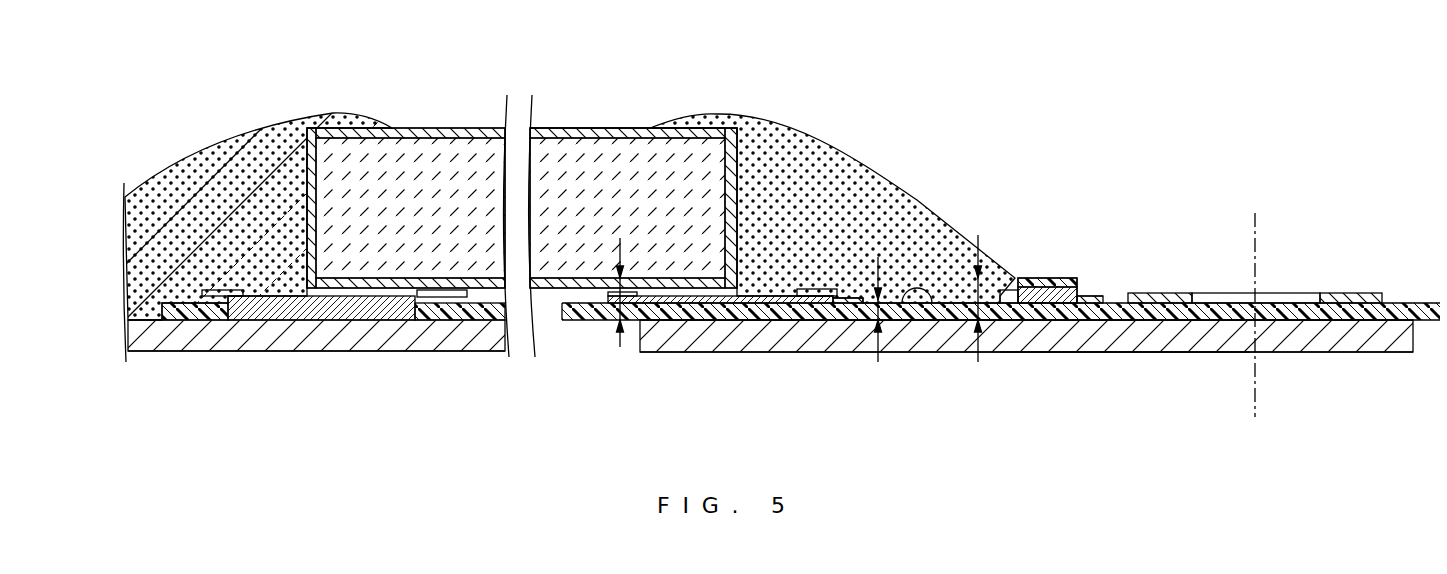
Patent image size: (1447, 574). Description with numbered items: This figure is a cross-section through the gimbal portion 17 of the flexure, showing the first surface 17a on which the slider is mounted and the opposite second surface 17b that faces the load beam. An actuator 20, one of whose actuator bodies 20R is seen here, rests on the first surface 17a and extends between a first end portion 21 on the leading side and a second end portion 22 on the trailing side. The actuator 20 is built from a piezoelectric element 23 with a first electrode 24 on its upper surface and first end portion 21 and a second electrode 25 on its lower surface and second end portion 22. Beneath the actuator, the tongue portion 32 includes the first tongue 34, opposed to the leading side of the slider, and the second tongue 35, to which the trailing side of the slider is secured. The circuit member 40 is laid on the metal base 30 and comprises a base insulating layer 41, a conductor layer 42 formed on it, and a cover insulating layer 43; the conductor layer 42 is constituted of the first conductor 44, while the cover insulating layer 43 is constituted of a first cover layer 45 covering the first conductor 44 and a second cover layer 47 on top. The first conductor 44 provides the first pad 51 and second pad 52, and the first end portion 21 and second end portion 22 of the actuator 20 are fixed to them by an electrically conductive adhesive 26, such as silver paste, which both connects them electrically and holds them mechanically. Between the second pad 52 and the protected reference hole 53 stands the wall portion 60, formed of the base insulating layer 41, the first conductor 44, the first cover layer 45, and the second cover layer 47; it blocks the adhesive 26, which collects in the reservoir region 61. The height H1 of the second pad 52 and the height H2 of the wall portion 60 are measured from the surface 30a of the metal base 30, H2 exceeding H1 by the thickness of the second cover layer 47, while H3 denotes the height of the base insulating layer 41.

The gimbal portion 17 is at (1150, 133).
The first surface 17a is at (150, 313).
The second surface 17b is at (170, 355).
The actuator 20 is at (555, 128).
The actuator body 20R is at (640, 126).
The first end portion 21 is at (300, 155).
The second end portion 22 is at (740, 180).
The piezoelectric element 23 is at (457, 147).
The first electrode 24 is at (408, 133).
The second electrode 25 is at (607, 130).
The electrically conductive adhesive 26 is at (207, 163).
The metal base 30 is at (1373, 343).
The surface of the metal base 30a is at (727, 324).
The tongue portion 32 is at (1112, 353).
The first tongue 34 is at (432, 342).
The second tongue 35 is at (1172, 343).
The circuit member 40 is at (1106, 288).
The base insulating layer 41 is at (1412, 307).
The conductor layer 42 is at (1060, 310).
The cover insulating layer 43 is at (1081, 277).
The first conductor 44 is at (343, 312).
The first cover layer 45 is at (842, 305).
The second cover layer 47 is at (1067, 297).
The first pad 51 is at (250, 320).
The second pad 52 is at (682, 305).
The reference hole 53 is at (1297, 298).
The wall portion 60 is at (1040, 275).
The reservoir region 61 is at (928, 300).
The height of the second pad H1 is at (619, 281).
The height of the wall portion H2 is at (978, 283).
The height of the base insulating layer H3 is at (878, 297).